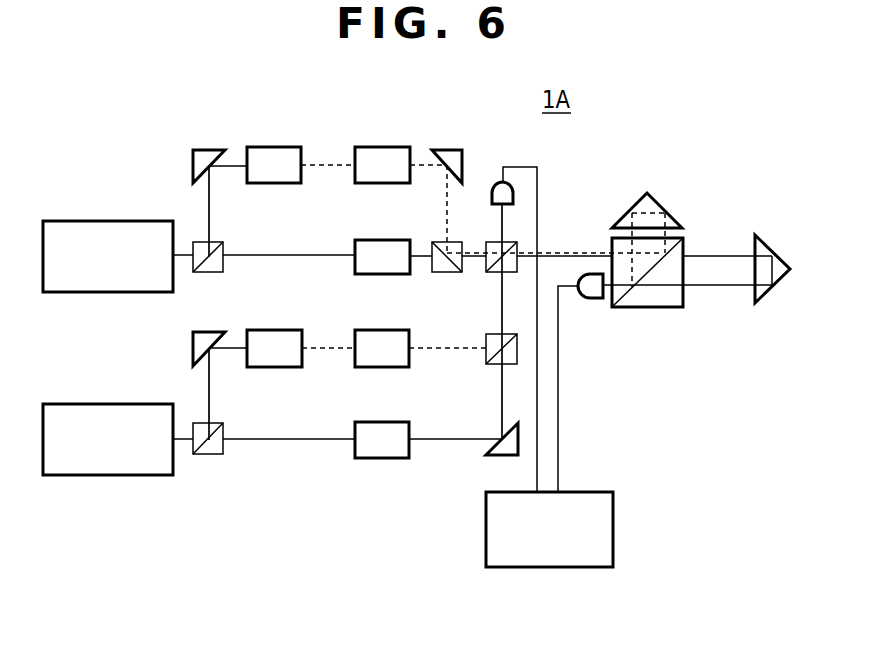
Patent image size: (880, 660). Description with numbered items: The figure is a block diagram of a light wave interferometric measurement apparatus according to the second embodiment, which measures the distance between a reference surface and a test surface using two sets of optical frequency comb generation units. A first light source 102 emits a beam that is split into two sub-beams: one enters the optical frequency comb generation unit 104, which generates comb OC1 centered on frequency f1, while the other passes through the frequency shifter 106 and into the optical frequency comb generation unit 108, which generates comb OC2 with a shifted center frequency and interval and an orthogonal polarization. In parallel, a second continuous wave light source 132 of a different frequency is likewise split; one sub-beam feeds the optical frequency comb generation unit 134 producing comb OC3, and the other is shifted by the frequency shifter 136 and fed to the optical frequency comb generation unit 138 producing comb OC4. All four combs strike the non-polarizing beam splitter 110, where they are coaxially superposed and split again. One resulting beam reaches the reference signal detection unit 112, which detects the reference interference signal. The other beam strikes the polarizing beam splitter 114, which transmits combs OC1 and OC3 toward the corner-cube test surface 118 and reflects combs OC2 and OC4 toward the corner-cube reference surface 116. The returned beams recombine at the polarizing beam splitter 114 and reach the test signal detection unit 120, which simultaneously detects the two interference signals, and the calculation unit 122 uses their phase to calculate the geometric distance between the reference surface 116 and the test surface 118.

The light source 102 is at (118, 221).
The optical frequency comb generation unit 104 is at (388, 240).
The frequency shifter 106 is at (287, 147).
The optical frequency comb generation unit 108 is at (388, 147).
The non-polarizing beam splitter 110 is at (495, 273).
The reference signal detection unit 112 is at (496, 182).
The polarizing beam splitter 114 is at (680, 308).
The reference surface 116 is at (655, 198).
The test surface 118 is at (760, 245).
The test signal detection unit 120 is at (590, 298).
The calculation unit 122 is at (593, 492).
The light source 132 is at (118, 404).
The optical frequency comb generation unit 134 is at (388, 422).
The frequency shifter 136 is at (287, 330).
The optical frequency comb generation unit 138 is at (388, 330).